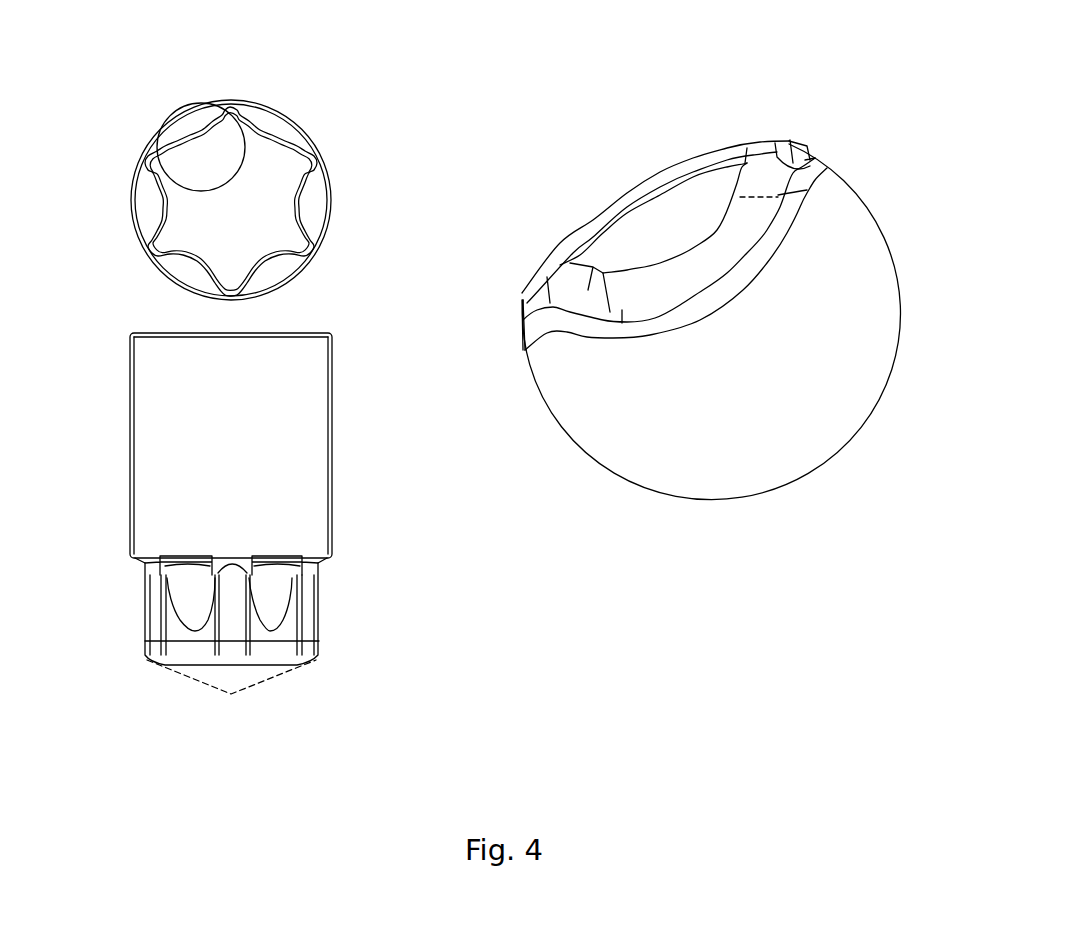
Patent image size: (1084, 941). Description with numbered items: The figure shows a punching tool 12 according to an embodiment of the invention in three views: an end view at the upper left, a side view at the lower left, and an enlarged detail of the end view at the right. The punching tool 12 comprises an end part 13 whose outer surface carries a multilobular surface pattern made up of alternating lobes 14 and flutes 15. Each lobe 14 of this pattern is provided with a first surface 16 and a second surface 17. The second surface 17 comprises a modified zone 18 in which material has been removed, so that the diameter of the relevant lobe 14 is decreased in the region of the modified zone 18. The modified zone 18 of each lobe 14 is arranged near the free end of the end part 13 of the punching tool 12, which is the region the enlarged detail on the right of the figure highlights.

The punching tool 12 is at (135, 116).
The end part 13 is at (270, 222).
The lobe 14 is at (233, 625).
The flute 15 is at (698, 273).
The first surface 16 is at (763, 227).
The second surface 17 is at (562, 303).
The modified zone 18 is at (208, 648).